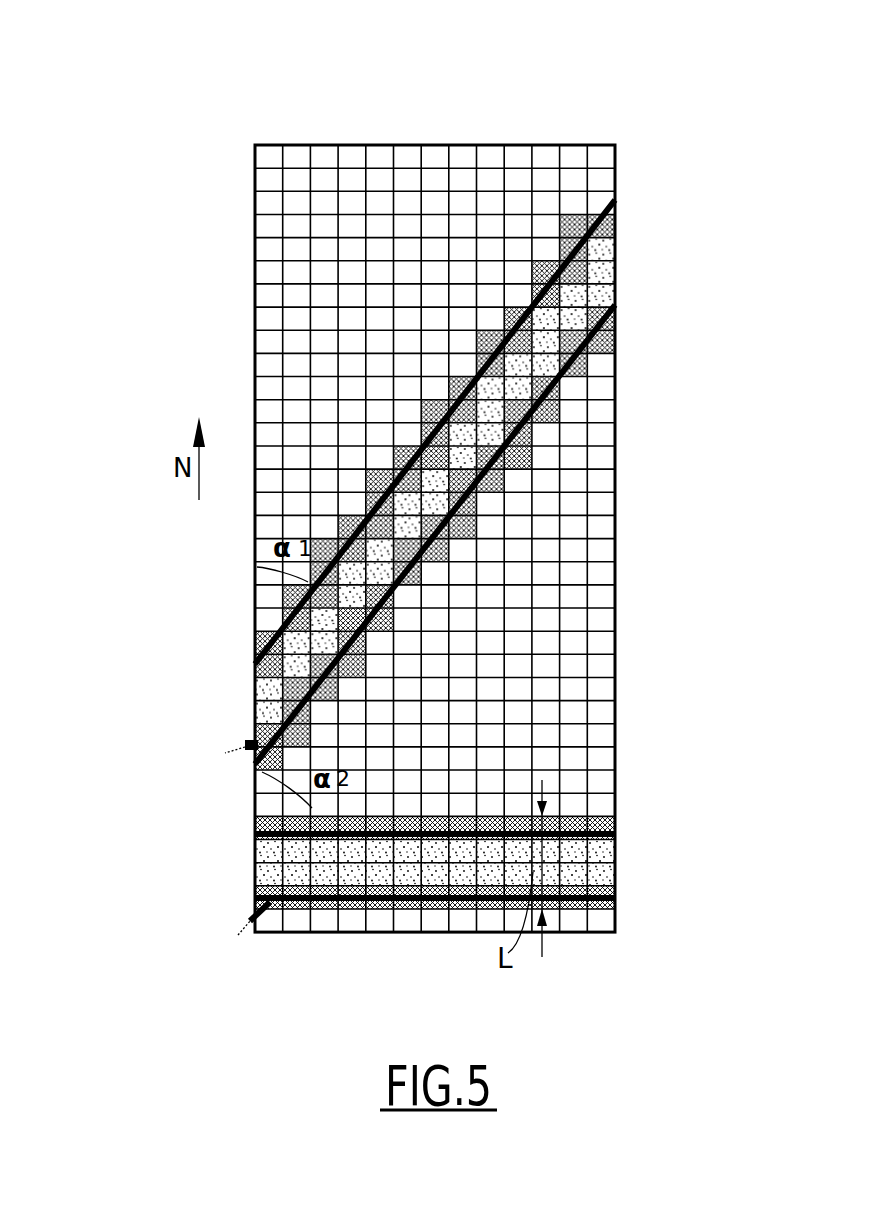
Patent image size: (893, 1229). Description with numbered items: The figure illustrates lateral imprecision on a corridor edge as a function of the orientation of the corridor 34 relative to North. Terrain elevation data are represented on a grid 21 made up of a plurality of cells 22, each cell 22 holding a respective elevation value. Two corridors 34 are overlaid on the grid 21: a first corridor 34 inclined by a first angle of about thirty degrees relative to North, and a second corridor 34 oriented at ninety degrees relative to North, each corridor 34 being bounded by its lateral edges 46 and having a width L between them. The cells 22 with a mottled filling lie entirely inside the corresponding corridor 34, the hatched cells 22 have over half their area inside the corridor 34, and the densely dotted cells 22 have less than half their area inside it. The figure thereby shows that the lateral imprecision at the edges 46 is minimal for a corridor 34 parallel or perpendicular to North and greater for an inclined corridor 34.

The grid 21 is at (506, 108).
The cell 22 is at (255, 707).
The corridor 34 is at (253, 915).
The lateral edge 46 is at (615, 200).